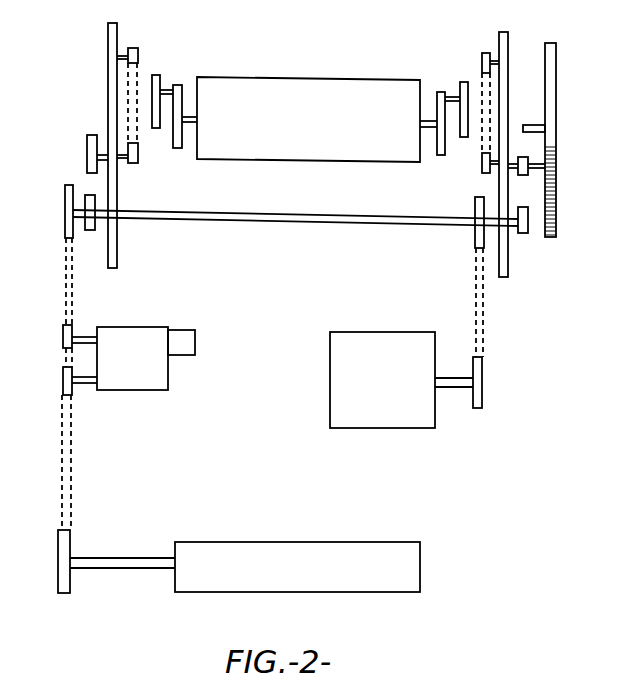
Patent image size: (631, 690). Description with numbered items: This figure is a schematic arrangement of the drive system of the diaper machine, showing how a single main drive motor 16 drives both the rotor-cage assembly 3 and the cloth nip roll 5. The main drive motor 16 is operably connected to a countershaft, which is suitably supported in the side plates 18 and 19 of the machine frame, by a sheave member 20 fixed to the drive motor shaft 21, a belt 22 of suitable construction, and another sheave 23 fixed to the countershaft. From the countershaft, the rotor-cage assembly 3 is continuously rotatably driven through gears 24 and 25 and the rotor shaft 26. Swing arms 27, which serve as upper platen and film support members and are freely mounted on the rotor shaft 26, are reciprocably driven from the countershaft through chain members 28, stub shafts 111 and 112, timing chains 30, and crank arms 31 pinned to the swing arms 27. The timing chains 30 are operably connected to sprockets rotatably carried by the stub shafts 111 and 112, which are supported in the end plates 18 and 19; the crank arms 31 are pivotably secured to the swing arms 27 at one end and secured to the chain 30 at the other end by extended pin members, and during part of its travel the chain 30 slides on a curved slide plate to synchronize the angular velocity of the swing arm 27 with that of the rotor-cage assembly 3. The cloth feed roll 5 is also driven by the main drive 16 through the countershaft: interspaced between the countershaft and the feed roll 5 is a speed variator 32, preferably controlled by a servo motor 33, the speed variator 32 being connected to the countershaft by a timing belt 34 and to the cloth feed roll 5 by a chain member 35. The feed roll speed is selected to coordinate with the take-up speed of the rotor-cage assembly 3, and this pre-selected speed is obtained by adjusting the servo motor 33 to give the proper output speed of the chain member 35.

The rotor-cage assembly 3 is at (324, 78).
The cloth nip roll 5 is at (335, 534).
The main drive motor 16 is at (330, 338).
The side plate 18 is at (508, 58).
The side plate 19 is at (109, 36).
The sheave member 20 is at (483, 405).
The drive motor shaft 21 is at (452, 380).
The belt 22 is at (489, 350).
The sheave 23 is at (475, 208).
The gear 24 is at (556, 237).
The gear 25 is at (556, 130).
The rotor shaft 26 is at (426, 139).
The swing arm 27 is at (178, 148).
The chain member 28 is at (86, 182).
The timing chain 30 is at (146, 73).
The crank arm 31 is at (162, 80).
The speed variator 32 is at (168, 384).
The servo motor 33 is at (195, 331).
The timing belt 34 is at (64, 294).
The chain member 35 is at (71, 488).
The stub shaft 111 is at (125, 162).
The stub shaft 112 is at (128, 48).